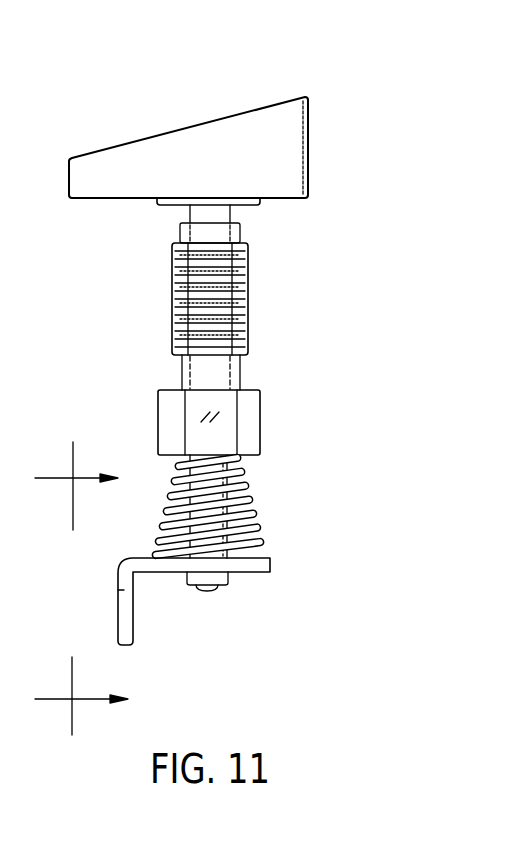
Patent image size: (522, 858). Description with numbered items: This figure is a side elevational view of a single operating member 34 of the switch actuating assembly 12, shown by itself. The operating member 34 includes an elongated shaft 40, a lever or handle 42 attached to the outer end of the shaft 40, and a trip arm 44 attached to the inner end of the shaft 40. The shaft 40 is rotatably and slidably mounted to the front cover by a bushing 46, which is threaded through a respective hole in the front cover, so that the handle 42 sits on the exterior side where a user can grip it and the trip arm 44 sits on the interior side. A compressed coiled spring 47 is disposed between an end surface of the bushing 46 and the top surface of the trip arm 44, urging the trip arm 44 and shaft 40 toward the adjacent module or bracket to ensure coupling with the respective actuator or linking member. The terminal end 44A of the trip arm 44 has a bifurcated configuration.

The operating member 34 is at (288, 88).
The handle 42 is at (308, 148).
The bushing 46 is at (249, 341).
The shaft 40 is at (220, 450).
The compressed coiled spring 47 is at (253, 490).
The trip arm 44 is at (270, 566).
The terminal end 44A is at (133, 620).
The switch actuating assembly 12 is at (81, 588).